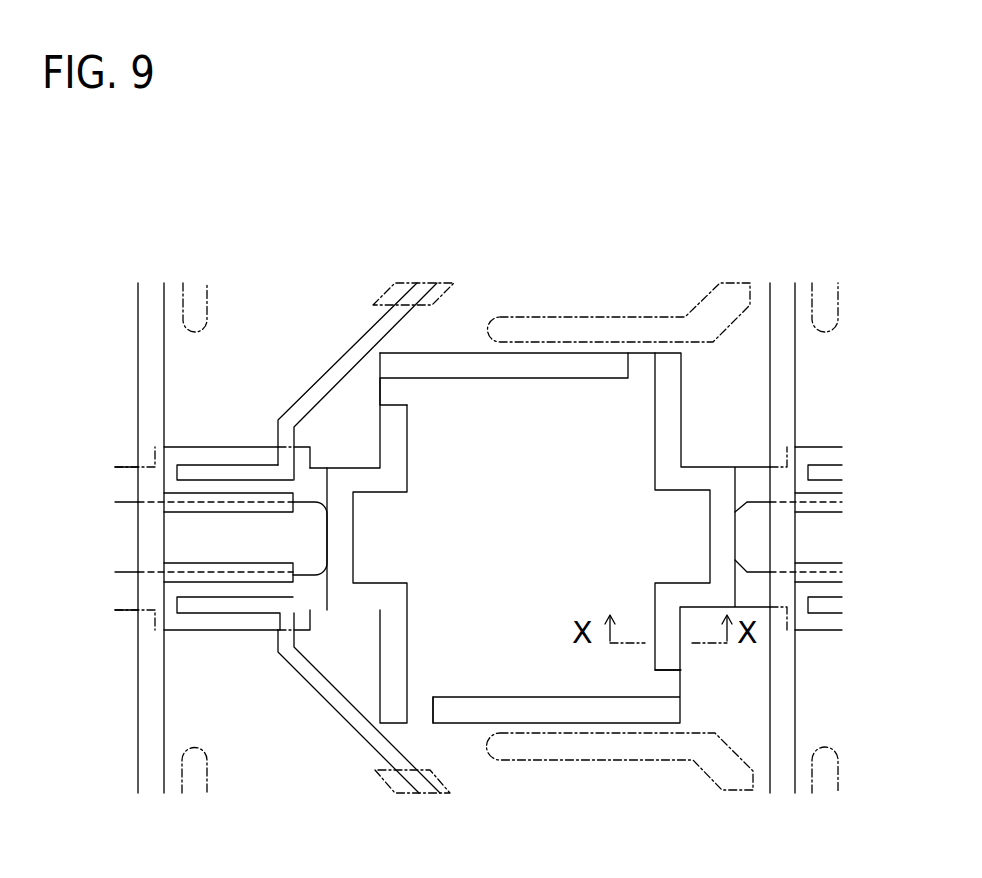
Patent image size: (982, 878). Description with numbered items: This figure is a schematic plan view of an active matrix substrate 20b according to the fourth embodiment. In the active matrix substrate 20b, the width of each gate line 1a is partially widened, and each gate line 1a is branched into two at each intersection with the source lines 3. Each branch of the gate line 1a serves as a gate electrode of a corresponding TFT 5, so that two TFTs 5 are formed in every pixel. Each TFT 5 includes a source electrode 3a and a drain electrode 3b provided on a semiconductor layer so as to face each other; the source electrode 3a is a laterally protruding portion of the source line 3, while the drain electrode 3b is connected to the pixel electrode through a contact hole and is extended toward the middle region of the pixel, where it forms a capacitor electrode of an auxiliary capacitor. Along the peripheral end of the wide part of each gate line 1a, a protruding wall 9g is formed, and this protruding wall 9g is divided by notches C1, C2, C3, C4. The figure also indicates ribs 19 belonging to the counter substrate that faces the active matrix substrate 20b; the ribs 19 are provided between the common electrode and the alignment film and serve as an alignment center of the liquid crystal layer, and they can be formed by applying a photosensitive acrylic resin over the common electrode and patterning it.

The active matrix substrate 20b is at (175, 196).
The source line 3 is at (148, 755).
The source electrode 3a is at (229, 568).
The drain electrode 3b is at (333, 699).
The gate line 1a is at (318, 604).
The TFT 5 is at (214, 440).
The protruding wall 9g is at (663, 663).
The rib 19 is at (211, 775).
The notch C1 is at (637, 367).
The notch C2 is at (680, 686).
The notch C3 is at (419, 727).
The notch C4 is at (393, 396).